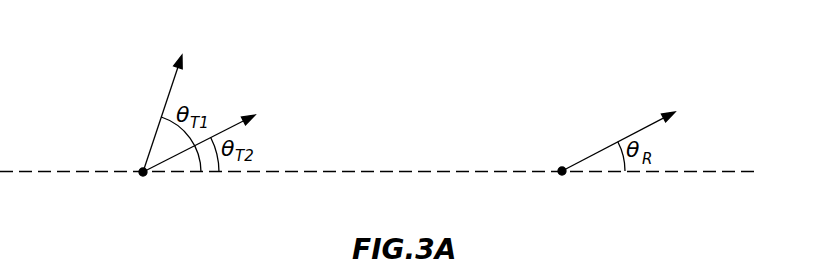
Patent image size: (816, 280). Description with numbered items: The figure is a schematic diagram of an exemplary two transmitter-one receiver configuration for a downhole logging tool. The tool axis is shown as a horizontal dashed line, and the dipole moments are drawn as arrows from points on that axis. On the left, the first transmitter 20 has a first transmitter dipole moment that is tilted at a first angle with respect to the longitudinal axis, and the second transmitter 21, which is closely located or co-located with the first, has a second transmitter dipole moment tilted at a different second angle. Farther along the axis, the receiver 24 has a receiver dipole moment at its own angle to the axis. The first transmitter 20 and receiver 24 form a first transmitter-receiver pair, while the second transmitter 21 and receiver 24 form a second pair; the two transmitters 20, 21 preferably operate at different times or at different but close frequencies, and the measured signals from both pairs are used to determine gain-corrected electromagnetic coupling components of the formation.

The transmitter 20 is at (148, 90).
The transmitter 21 is at (232, 106).
The receiver 24 is at (590, 128).